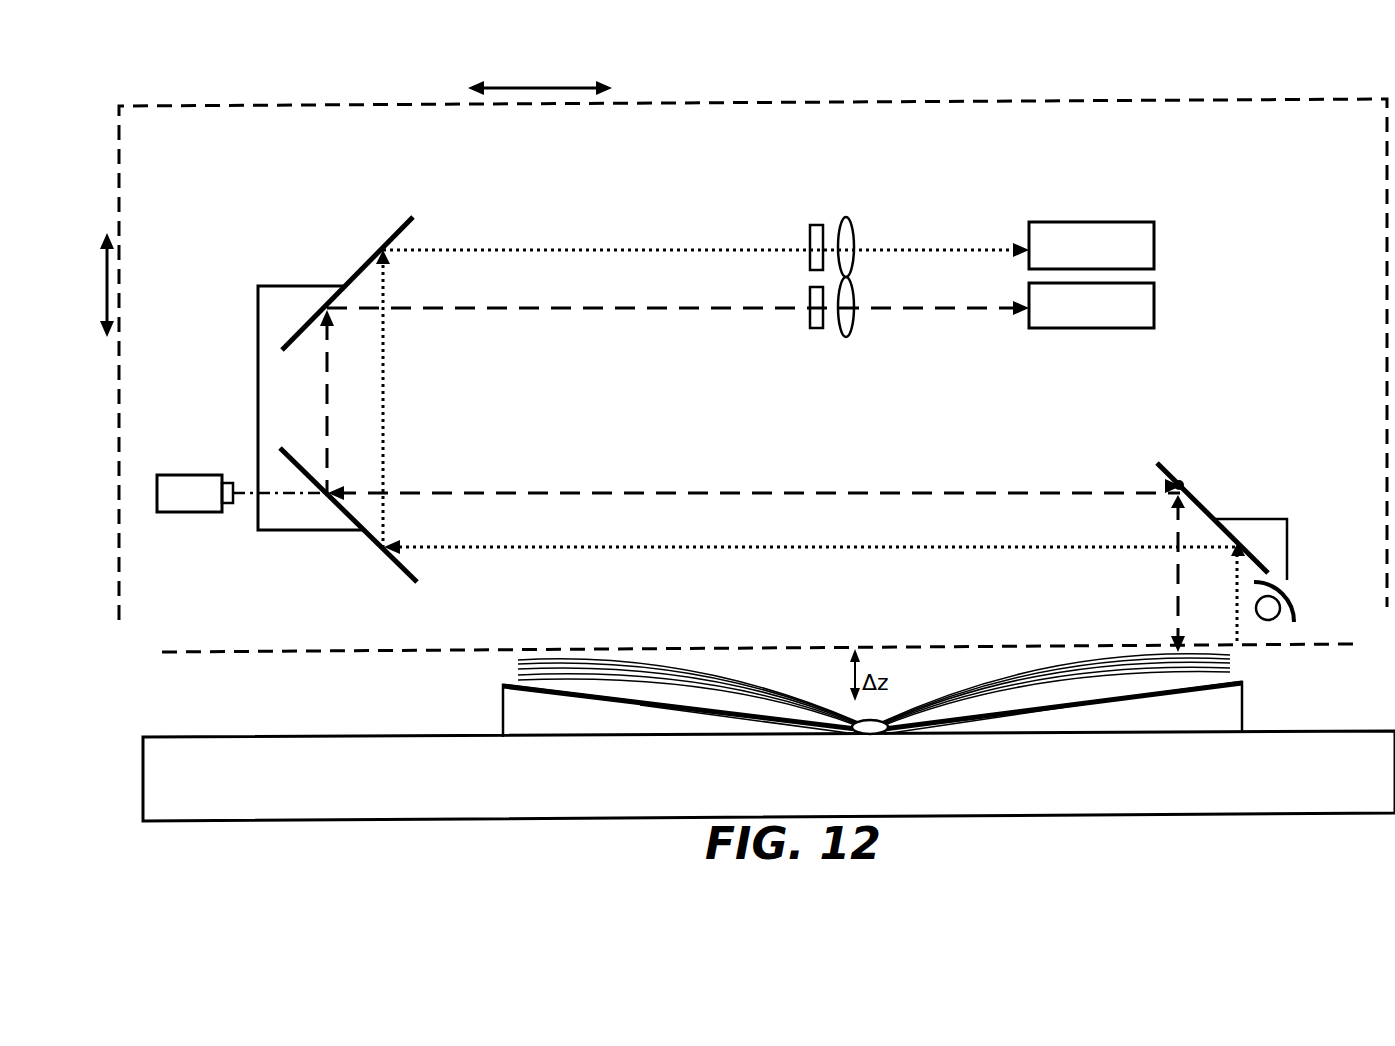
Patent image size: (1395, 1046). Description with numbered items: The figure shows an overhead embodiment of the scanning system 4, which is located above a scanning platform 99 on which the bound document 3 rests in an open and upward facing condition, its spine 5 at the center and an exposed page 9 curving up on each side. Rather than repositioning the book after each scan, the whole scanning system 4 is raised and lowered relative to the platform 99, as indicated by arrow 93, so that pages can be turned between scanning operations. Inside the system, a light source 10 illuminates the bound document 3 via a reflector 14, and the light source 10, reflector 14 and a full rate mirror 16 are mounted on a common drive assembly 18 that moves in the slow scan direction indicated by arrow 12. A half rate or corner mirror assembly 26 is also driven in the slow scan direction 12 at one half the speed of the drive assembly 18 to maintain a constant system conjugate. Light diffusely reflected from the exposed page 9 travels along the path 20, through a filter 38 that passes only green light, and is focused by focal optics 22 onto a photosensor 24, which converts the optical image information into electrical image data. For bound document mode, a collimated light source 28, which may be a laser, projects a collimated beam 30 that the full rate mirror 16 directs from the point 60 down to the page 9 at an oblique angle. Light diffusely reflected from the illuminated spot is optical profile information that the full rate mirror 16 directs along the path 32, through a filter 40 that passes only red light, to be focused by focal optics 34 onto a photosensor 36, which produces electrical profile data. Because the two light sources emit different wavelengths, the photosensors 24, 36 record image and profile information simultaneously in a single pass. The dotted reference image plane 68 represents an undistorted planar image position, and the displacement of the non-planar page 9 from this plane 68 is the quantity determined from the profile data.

The bound document 3 is at (963, 720).
The scanning system 4 is at (947, 100).
The spine 5 is at (870, 737).
The exposed page 9 is at (988, 672).
The light source 10 is at (1266, 620).
The slow scan direction 12 is at (537, 87).
The reflector 14 is at (1295, 615).
The full rate mirror 16 is at (1202, 502).
The common drive assembly 18 is at (1287, 555).
The optical image information path 20 is at (548, 547).
The focal optics 22 is at (846, 219).
The photosensor 24 is at (1108, 222).
The half rate mirror assembly 26 is at (258, 397).
The collimated light source 28 is at (188, 512).
The collimated beam 30 is at (283, 493).
The optical profile information path 32 is at (606, 308).
The focal optics 34 is at (848, 337).
The photosensor 36 is at (1105, 330).
The filter 38 is at (817, 223).
The filter 40 is at (818, 330).
The beam redirection point 60 is at (1180, 473).
The reference image plane 68 is at (328, 652).
The raising and lowering arrow 93 is at (105, 290).
The scanning platform 99 is at (408, 737).